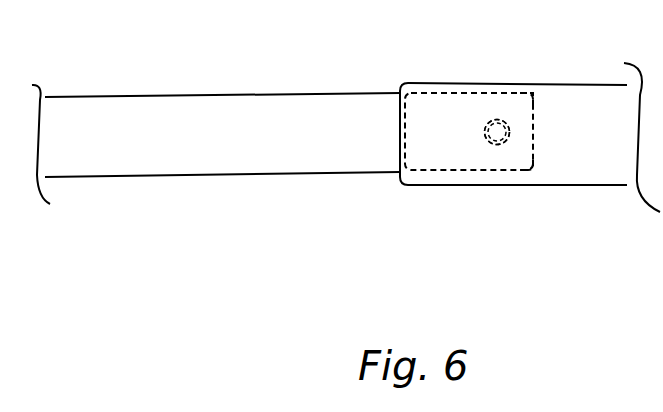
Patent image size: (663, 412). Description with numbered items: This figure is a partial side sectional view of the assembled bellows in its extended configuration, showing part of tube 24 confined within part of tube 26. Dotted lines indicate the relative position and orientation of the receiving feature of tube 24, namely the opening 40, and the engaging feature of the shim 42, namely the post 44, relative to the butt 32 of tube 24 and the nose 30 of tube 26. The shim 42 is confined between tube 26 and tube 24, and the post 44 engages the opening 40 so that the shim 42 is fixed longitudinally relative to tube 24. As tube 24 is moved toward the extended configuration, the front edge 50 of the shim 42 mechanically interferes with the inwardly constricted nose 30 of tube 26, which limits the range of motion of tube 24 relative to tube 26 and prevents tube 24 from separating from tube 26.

The tube 24 is at (90, 96).
The tube 26 is at (575, 84).
The nose 30 is at (400, 85).
The butt 32 is at (533, 95).
The opening 40 is at (509, 134).
The shim 42 is at (530, 167).
The post 44 is at (485, 131).
The front edge 50 is at (400, 137).